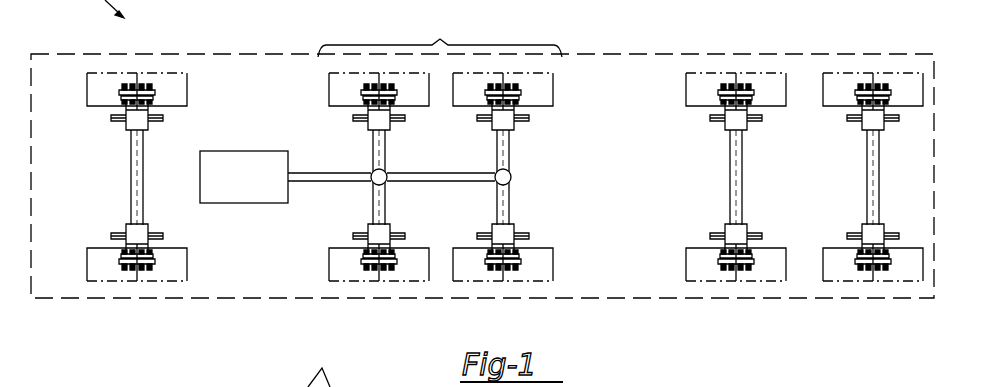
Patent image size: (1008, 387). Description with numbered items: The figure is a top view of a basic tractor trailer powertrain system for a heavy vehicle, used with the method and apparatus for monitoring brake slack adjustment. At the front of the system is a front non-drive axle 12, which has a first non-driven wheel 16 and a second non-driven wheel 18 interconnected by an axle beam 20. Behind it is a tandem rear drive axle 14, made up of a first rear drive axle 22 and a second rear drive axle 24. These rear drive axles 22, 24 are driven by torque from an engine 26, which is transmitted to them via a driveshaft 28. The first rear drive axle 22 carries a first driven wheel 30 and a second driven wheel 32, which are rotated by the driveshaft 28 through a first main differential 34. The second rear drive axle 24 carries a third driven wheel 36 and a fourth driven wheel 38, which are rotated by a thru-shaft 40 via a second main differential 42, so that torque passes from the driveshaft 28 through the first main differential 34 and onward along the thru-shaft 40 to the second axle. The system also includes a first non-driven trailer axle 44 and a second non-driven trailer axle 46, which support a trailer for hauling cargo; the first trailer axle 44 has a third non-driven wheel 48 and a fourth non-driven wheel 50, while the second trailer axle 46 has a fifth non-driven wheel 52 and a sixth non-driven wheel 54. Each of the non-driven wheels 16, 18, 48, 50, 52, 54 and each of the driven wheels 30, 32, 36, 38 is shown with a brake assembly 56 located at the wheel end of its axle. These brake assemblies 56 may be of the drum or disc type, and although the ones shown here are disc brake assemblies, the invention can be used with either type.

The front non-drive axle 12 is at (143, 162).
The tandem rear drive axle 14 is at (440, 36).
The first non-driven wheel 16 is at (181, 80).
The second non-driven wheel 18 is at (174, 273).
The axle beam 20 is at (131, 183).
The first rear drive axle 22 is at (375, 159).
The second rear drive axle 24 is at (512, 140).
The engine 26 is at (239, 161).
The driveshaft 28 is at (318, 183).
The first driven wheel 30 is at (337, 91).
The second driven wheel 32 is at (330, 262).
The first main differential 34 is at (388, 178).
The third driven wheel 36 is at (545, 85).
The fourth driven wheel 38 is at (548, 262).
The thru-shaft 40 is at (443, 177).
The second main differential 42 is at (511, 176).
The first non-driven trailer axle 44 is at (730, 174).
The second non-driven trailer axle 46 is at (879, 180).
The third non-driven wheel 48 is at (692, 84).
The fourth non-driven wheel 50 is at (690, 265).
The fifth non-driven wheel 52 is at (831, 92).
The sixth non-driven wheel 54 is at (832, 255).
The brake assembly 56 is at (112, 118).